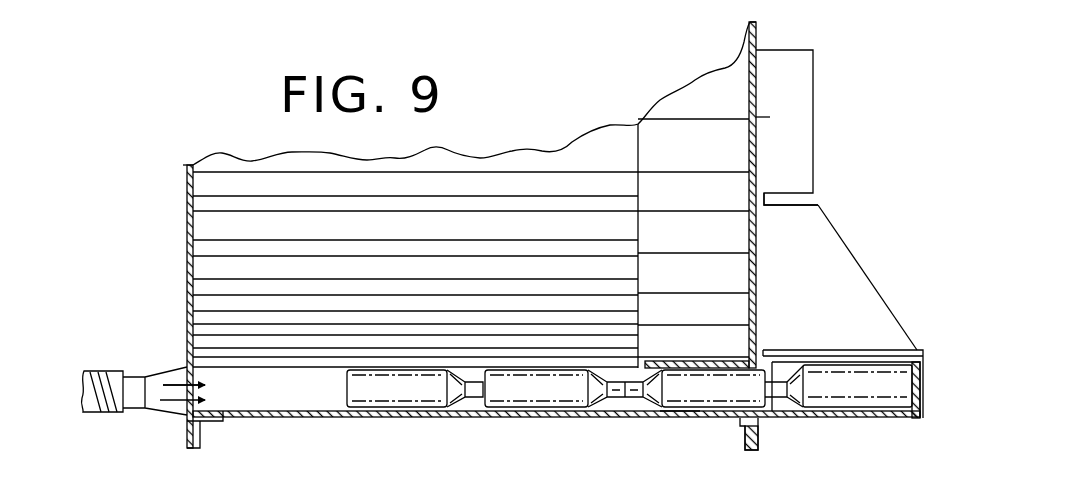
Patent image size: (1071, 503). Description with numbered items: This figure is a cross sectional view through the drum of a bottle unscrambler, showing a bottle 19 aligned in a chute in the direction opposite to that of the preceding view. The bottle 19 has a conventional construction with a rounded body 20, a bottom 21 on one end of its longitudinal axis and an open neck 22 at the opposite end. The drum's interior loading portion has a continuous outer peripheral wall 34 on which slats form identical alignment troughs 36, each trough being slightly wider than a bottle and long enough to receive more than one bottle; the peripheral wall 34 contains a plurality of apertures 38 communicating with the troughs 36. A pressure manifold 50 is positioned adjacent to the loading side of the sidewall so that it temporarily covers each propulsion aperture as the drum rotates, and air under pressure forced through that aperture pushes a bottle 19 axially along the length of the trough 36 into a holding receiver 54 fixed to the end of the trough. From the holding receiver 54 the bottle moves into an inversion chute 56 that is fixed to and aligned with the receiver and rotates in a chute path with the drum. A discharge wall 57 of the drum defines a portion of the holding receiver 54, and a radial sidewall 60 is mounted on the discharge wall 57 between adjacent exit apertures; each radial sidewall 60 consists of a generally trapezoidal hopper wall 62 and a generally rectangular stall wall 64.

The bottle 19 is at (532, 410).
The rounded body 20 is at (560, 397).
The bottom 21 is at (480, 404).
The open neck 22 is at (782, 400).
The outer peripheral wall 34 is at (306, 421).
The alignment trough 36 is at (277, 390).
The aperture 38 is at (417, 418).
The pressure manifold 50 is at (168, 372).
The holding receiver 54 is at (682, 424).
The inversion chute 56 is at (182, 229).
The discharge wall 57 is at (756, 116).
The radial sidewall 60 is at (866, 254).
The hopper wall 62 is at (815, 226).
The stall wall 64 is at (793, 142).